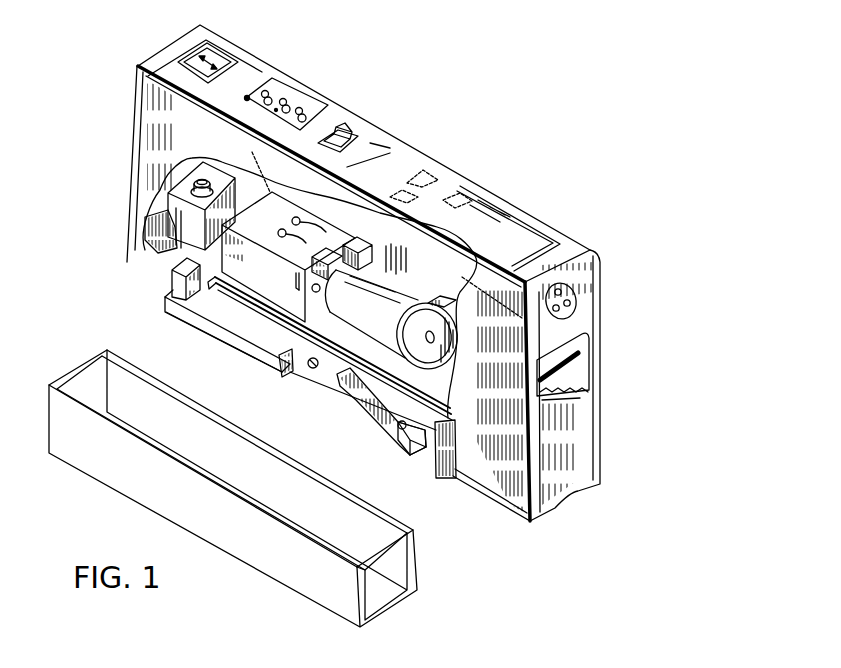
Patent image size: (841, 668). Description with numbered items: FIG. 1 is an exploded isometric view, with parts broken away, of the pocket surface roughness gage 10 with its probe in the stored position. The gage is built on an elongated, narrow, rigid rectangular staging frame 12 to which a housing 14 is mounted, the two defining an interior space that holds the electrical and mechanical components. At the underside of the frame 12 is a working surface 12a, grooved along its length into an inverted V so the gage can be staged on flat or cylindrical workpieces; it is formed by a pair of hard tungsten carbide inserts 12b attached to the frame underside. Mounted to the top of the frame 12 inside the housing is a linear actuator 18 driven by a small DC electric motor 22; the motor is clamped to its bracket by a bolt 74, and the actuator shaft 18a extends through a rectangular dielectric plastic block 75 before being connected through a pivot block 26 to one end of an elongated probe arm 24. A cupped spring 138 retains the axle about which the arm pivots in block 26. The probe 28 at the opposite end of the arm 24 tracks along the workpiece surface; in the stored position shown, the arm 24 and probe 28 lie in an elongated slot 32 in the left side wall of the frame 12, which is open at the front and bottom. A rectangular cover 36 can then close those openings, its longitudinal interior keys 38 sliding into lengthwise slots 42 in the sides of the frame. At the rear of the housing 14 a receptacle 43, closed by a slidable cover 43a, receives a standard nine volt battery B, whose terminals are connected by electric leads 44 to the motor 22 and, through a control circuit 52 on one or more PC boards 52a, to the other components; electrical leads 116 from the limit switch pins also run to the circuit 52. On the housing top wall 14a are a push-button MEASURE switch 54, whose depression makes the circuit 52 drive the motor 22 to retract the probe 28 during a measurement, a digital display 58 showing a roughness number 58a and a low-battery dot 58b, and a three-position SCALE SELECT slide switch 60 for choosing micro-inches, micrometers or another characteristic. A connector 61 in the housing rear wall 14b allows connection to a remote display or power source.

The pocket surface roughness gage 10 is at (137, 45).
The staging frame 12 is at (437, 470).
The working surface 12a is at (270, 372).
The inserts 12b is at (283, 366).
The housing 14 is at (497, 200).
The housing top wall 14a is at (603, 211).
The housing rear wall 14b is at (653, 268).
The linear actuator 18 is at (270, 365).
The actuator shaft 18a is at (266, 268).
The DC electric motor 22 is at (386, 313).
The probe arm 24 is at (233, 318).
The pivot block 26 is at (212, 254).
The probe 28 is at (367, 446).
The slot 32 is at (413, 456).
The cover 36 is at (125, 492).
The keys 38 is at (372, 550).
The lengthwise slots 42 is at (193, 320).
The receptacle 43 is at (580, 342).
The receptacle cover 43a is at (582, 408).
The electric leads 44 is at (450, 298).
The control circuit 52 is at (150, 238).
The PC boards 52a is at (150, 107).
The push-button MEASURE switch 54 is at (218, 62).
The digital display 58 is at (293, 100).
The number 58a is at (314, 107).
The dot 58b is at (243, 100).
The SCALE SELECT slide switch 60 is at (354, 130).
The connector 61 is at (578, 300).
The bolt 74 is at (302, 286).
The block 75 is at (292, 220).
The electrical leads 116 is at (285, 237).
The cupped spring 138 is at (208, 284).
The battery B is at (566, 372).